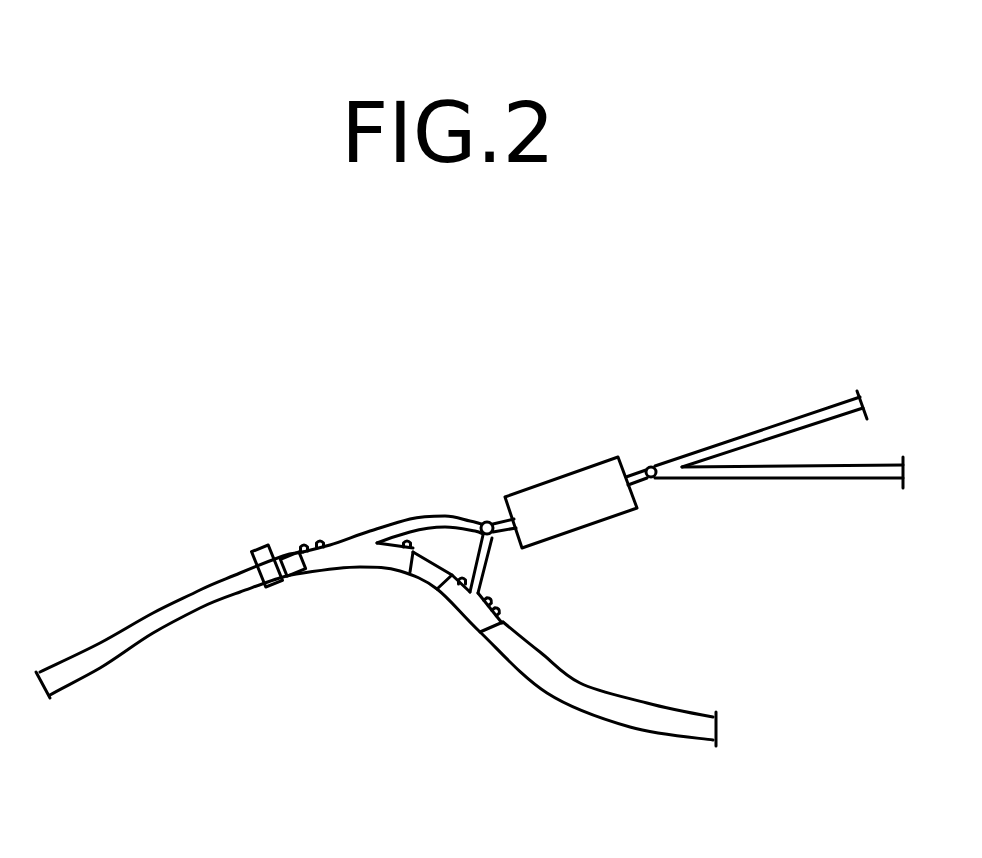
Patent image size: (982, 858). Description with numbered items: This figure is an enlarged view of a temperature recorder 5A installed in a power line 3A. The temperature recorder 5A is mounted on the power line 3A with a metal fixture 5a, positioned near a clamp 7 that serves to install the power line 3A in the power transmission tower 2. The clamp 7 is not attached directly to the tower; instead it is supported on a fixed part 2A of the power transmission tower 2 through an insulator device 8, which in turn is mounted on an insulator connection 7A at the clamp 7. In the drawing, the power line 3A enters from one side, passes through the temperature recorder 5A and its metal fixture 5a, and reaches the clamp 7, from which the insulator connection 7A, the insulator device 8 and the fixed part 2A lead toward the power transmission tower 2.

The power line 3A is at (152, 628).
The temperature recorder 5A is at (265, 548).
The metal fixture 5a is at (277, 588).
The clamp 7 is at (402, 528).
The insulator connection 7A is at (487, 522).
The insulator device 8 is at (582, 515).
The fixed part 2A is at (650, 462).
The power transmission tower 2 is at (803, 418).